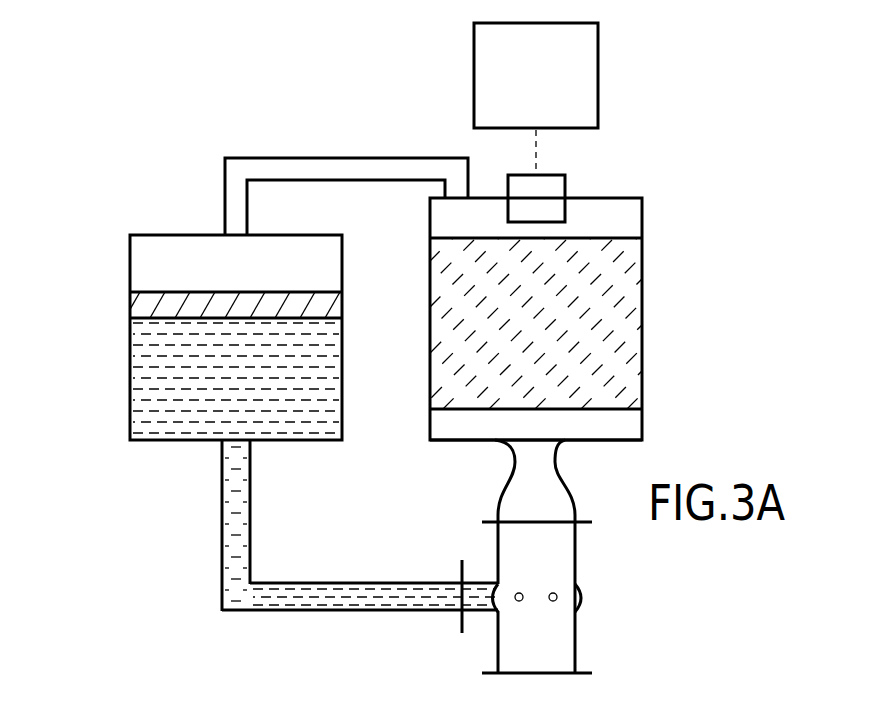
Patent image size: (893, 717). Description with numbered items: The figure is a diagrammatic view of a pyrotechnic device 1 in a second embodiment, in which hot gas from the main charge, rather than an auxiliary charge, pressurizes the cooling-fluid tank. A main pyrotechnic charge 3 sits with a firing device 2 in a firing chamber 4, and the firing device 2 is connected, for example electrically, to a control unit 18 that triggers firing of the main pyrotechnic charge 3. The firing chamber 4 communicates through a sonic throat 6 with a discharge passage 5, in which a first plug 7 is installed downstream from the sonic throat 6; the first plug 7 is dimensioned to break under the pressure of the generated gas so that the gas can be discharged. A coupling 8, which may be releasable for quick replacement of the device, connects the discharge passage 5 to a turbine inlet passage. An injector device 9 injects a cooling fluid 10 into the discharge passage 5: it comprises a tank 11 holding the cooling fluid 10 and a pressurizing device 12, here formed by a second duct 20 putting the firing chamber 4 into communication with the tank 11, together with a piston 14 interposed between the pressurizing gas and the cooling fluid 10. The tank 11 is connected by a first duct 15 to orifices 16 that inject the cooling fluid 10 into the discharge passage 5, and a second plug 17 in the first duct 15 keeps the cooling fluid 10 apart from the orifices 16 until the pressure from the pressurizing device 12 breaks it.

The pyrotechnic device 1 is at (680, 88).
The firing device 2 is at (548, 182).
The main pyrotechnic charge 3 is at (615, 326).
The firing chamber 4 is at (625, 426).
The discharge passage 5 is at (557, 633).
The sonic throat 6 is at (560, 455).
The first plug 7 is at (555, 522).
The coupling 8 is at (490, 668).
The injector device 9 is at (197, 534).
The cooling fluid 10 is at (155, 380).
The tank 11 is at (130, 354).
The pressurizing device 12 is at (73, 200).
The piston 14 is at (172, 300).
The first duct 15 is at (335, 582).
The orifices 16 is at (553, 597).
The second plug 17 is at (462, 596).
The control unit 18 is at (520, 90).
The second duct 20 is at (245, 168).